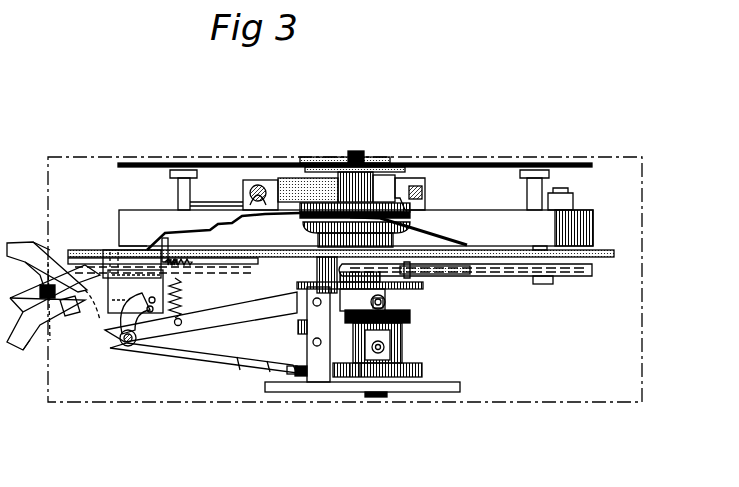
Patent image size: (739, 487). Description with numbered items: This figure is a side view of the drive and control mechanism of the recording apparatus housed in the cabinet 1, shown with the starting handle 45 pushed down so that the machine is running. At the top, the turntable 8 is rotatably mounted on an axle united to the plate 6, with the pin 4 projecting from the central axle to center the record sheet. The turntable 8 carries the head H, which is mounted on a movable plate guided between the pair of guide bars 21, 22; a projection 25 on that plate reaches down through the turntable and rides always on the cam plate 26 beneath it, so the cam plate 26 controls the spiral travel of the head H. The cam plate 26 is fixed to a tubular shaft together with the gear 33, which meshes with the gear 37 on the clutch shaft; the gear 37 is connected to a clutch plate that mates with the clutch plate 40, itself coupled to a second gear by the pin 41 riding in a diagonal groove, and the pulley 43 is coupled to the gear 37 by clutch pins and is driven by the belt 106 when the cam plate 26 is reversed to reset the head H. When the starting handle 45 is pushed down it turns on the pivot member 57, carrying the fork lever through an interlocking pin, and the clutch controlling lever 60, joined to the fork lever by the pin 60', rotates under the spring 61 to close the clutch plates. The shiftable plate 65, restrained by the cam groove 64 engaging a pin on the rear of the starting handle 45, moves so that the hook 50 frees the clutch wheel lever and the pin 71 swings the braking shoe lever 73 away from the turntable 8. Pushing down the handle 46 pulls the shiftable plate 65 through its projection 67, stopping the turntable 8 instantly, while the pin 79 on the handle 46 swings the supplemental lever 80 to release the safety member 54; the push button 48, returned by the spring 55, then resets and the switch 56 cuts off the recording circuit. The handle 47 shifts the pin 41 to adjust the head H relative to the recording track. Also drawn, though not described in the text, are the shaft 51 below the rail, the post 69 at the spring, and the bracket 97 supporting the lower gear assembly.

The cabinet 1 is at (116, 157).
The pin 4 is at (372, 160).
The plate 6 is at (350, 392).
The turntable 8 is at (137, 210).
The guide bar 21 is at (424, 192).
The guide bar 22 is at (259, 184).
The projection 25 is at (432, 202).
The cam plate 26 is at (262, 232).
The gear 33 is at (297, 284).
The gear 37 is at (395, 300).
The clutch plate 40 is at (410, 330).
The pin 41 is at (415, 368).
The pulley 43 is at (400, 263).
The starting handle 45 is at (605, 276).
The handle 46 is at (24, 240).
The handle 47 is at (312, 378).
The push button 48 is at (52, 262).
The hook 50 is at (157, 225).
The shaft 51 is at (317, 275).
The safety member 54 is at (72, 250).
The spring 55 is at (375, 397).
The switch 56 is at (405, 378).
The pivot member 57 is at (115, 337).
The clutch controlling lever 60 is at (203, 363).
The pin 60' is at (124, 358).
The spring 61 is at (192, 350).
The cam groove 64 is at (183, 288).
The shiftable plate 65 is at (305, 246).
The projection 67 is at (110, 248).
The post 69 is at (210, 262).
The pin 71 is at (212, 238).
The braking shoe lever 73 is at (230, 232).
The pin 79 is at (104, 262).
The supplemental lever 80 is at (62, 318).
The bracket 97 is at (300, 331).
The belt 106 is at (512, 277).
The head H is at (352, 152).